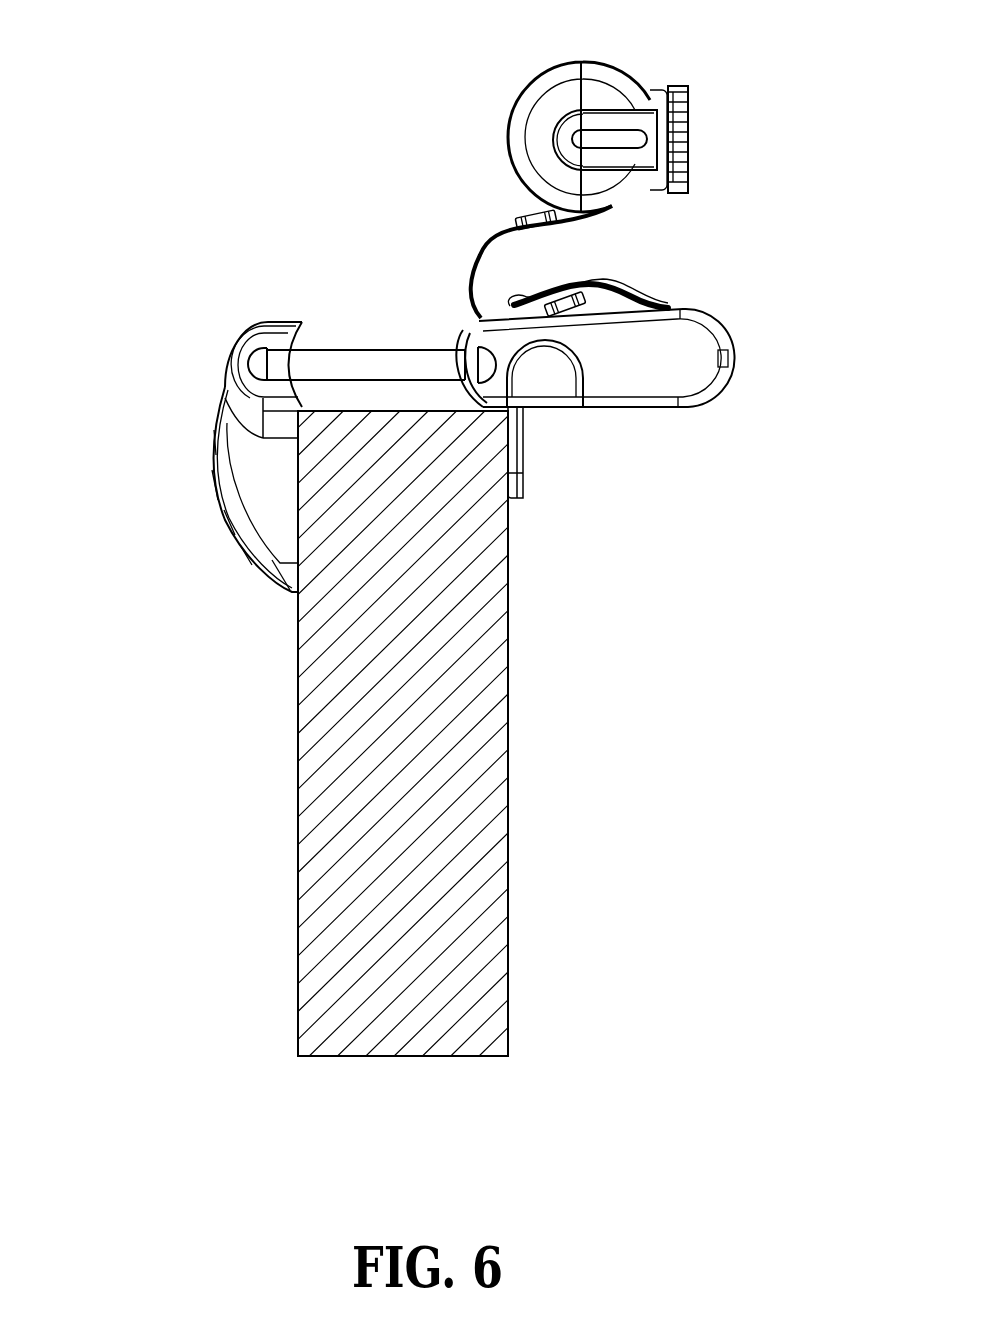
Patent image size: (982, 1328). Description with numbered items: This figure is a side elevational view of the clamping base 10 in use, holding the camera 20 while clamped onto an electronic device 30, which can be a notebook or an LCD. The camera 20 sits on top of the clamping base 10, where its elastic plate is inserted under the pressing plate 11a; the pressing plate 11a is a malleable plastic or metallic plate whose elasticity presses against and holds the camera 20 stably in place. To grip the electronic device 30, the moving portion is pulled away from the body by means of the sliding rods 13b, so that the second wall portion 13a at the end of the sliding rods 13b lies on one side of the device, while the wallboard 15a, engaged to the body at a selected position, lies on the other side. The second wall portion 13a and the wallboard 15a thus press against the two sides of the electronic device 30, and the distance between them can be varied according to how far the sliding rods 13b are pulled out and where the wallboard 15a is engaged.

The clamping base 10 is at (748, 357).
The pressing plate 11a is at (657, 298).
The second wall portion 13a is at (255, 469).
The sliding rods 13b is at (377, 355).
The wallboard 15a is at (520, 462).
The camera 20 is at (490, 92).
The electronic device 30 is at (360, 755).